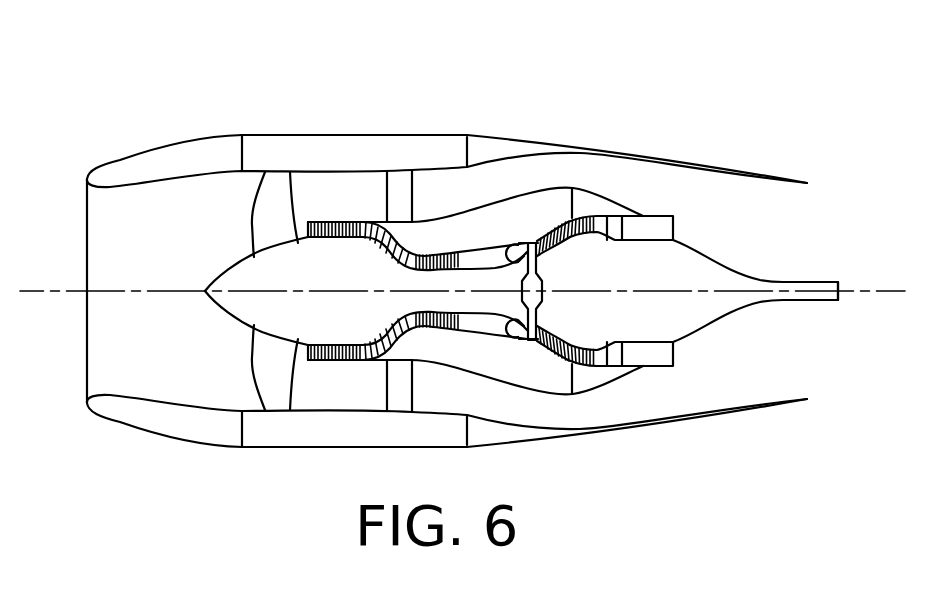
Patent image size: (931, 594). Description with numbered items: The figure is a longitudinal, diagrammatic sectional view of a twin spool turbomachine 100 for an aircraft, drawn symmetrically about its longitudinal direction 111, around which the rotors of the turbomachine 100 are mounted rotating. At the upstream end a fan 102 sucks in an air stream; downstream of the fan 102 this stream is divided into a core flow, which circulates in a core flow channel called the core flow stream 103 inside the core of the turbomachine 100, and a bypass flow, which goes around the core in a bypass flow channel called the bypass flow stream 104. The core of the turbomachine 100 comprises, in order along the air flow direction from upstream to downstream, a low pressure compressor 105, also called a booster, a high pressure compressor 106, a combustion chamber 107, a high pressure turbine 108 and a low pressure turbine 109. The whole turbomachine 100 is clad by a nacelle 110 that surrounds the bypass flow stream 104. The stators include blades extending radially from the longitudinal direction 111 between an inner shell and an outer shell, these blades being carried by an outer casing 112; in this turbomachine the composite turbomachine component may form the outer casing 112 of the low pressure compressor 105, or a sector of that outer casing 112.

The turbomachine 100 is at (243, 91).
The fan 102 is at (267, 362).
The core flow stream 103 is at (398, 328).
The bypass flow stream 104 is at (333, 392).
The low pressure compressor 105 is at (332, 214).
The high pressure compressor 106 is at (443, 247).
The combustion chamber 107 is at (503, 237).
The high pressure turbine 108 is at (532, 232).
The low pressure turbine 109 is at (601, 207).
The nacelle 110 is at (362, 134).
The longitudinal direction 111 is at (32, 291).
The outer casing 112 is at (350, 222).